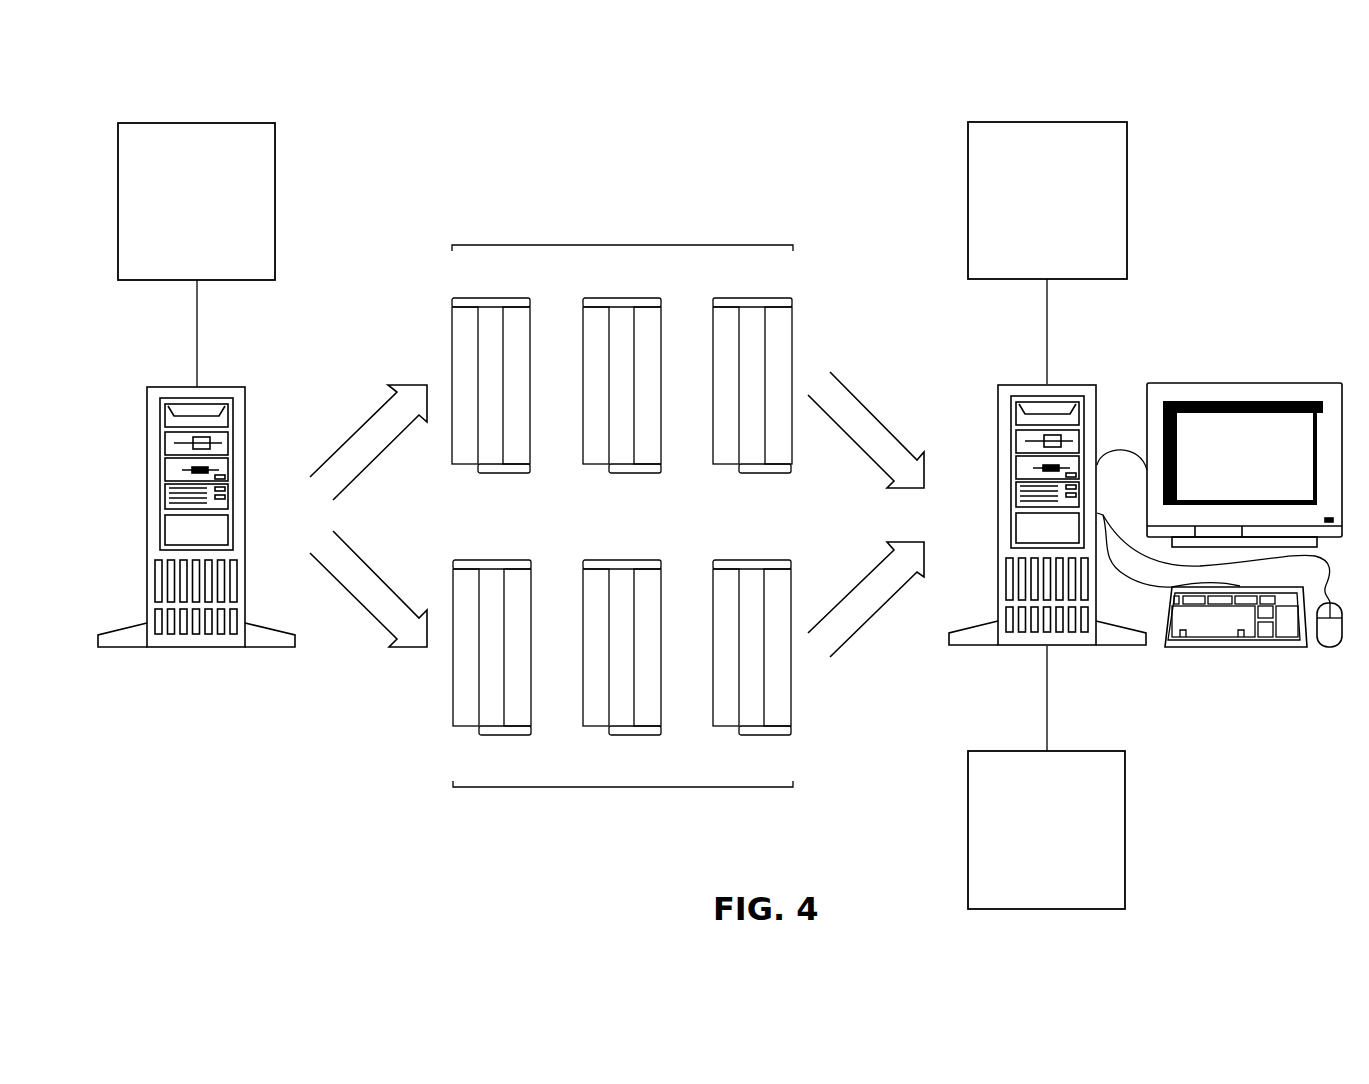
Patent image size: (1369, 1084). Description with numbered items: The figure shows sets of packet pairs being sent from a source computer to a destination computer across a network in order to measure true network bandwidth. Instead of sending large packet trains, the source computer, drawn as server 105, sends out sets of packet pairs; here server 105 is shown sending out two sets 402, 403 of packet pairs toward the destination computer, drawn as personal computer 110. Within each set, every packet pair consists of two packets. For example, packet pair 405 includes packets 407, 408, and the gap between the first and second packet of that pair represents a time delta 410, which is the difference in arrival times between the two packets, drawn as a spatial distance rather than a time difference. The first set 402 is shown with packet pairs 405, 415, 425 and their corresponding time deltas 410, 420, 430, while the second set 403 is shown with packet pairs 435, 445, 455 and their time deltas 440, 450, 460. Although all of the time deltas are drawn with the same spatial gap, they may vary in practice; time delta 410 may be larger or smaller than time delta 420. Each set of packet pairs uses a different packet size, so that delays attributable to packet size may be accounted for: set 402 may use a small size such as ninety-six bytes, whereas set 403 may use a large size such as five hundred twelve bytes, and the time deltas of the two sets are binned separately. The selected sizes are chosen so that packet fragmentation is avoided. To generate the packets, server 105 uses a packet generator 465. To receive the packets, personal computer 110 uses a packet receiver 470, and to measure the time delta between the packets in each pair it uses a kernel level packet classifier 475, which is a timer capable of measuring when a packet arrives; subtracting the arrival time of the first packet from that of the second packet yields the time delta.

The server 105 is at (165, 387).
The personal computer 110 is at (966, 348).
The set of packet pairs 402 is at (622, 244).
The set of packet pairs 403 is at (622, 788).
The packet pair 405 is at (754, 359).
The packet 407 is at (712, 311).
The packet 408 is at (795, 312).
The time delta 410 is at (766, 473).
The packet pair 415 is at (622, 297).
The time delta 420 is at (637, 473).
The packet pair 425 is at (490, 297).
The time delta 430 is at (505, 473).
The packet pair 435 is at (751, 559).
The time delta 440 is at (766, 735).
The packet pair 445 is at (621, 559).
The time delta 450 is at (636, 735).
The packet pair 455 is at (491, 559).
The time delta 460 is at (506, 735).
The packet generator 465 is at (158, 124).
The packet receiver 470 is at (1008, 123).
The kernel level packet classifier 475 is at (1008, 752).